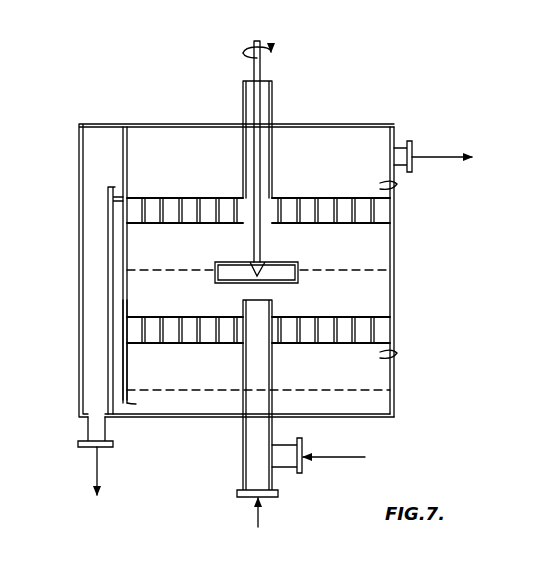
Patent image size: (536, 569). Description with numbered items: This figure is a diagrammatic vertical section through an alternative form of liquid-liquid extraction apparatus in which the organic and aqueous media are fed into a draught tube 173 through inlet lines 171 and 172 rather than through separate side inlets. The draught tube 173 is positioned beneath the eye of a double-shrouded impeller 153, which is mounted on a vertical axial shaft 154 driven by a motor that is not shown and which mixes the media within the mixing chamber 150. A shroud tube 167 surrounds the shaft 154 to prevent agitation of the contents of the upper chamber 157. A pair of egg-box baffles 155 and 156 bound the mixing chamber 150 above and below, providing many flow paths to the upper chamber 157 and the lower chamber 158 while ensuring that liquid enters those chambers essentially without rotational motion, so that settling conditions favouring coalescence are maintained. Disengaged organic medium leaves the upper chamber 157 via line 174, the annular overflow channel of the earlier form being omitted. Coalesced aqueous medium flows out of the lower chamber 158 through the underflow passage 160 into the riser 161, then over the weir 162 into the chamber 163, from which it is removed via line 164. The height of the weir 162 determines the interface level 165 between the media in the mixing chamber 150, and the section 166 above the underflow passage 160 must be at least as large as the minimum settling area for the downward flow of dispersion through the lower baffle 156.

The mixing chamber 150 is at (380, 286).
The double-shrouded impeller 153 is at (297, 268).
The vertical axial shaft 154 is at (253, 48).
The upper egg-box baffle 155 is at (386, 213).
The lower egg-box baffle 156 is at (386, 330).
The upper chamber 157 is at (386, 186).
The lower chamber 158 is at (386, 357).
The underflow passage 160 is at (131, 406).
The riser 161 is at (120, 359).
The weir 162 is at (126, 195).
The chamber 163 is at (84, 298).
The line 164 is at (96, 468).
The interface level 165 is at (207, 271).
The section above the underflow passage 166 is at (376, 392).
The shroud tube 167 is at (273, 100).
The inlet line 171 is at (345, 456).
The inlet line 172 is at (260, 512).
The draught tube 173 is at (245, 432).
The line 174 is at (434, 157).